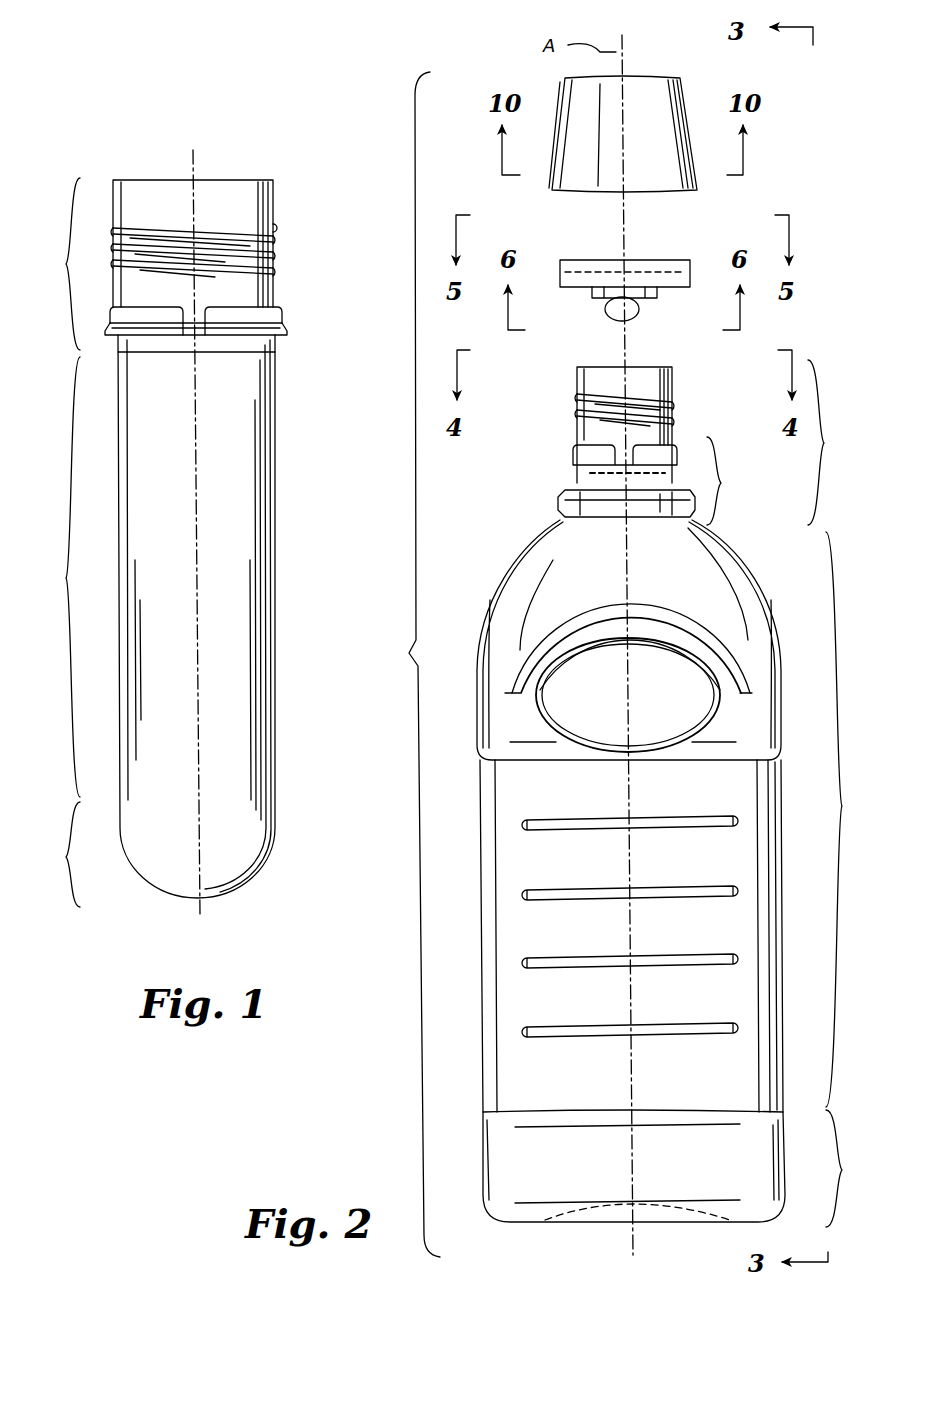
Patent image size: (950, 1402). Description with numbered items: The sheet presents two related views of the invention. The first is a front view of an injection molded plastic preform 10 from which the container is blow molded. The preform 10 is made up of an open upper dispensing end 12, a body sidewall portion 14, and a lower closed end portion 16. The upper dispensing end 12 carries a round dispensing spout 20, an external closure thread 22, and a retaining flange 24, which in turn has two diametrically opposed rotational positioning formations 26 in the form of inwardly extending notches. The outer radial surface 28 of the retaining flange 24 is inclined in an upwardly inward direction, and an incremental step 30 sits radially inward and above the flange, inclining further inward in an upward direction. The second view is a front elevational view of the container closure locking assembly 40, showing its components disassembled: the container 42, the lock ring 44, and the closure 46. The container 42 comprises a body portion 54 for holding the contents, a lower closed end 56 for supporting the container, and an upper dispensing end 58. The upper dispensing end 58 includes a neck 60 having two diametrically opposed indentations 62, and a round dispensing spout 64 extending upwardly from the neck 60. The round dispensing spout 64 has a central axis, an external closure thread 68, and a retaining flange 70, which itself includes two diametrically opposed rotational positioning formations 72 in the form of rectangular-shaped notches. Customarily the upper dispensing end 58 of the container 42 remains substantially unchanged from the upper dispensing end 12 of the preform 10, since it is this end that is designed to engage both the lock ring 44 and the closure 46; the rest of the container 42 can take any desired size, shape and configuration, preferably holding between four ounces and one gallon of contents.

In FIG. 1, the plastic preform 10 is at (251, 526).
In FIG. 1, the open upper dispensing end 12 is at (55, 264).
In FIG. 1, the body sidewall portion 14 is at (56, 577).
In FIG. 1, the lower closed end portion 16 is at (56, 854).
In FIG. 1, the round dispensing spout 20 is at (288, 178).
In FIG. 1, the external closure thread 22 is at (284, 238).
In FIG. 1, the retaining flange 24 is at (168, 340).
In FIG. 1, the rotational positioning formations 26 is at (210, 338).
In FIG. 1, the outer radial surface 28 is at (293, 328).
In FIG. 1, the incremental step 30 is at (286, 310).
In FIG. 2, the container closure locking assembly 40 is at (625, 655).
In FIG. 2, the container 42 is at (654, 793).
In FIG. 2, the lock ring 44 is at (673, 252).
In FIG. 2, the closure 46 is at (713, 82).
In FIG. 2, the body portion 54 is at (674, 816).
In FIG. 2, the lower closed end 56 is at (677, 1168).
In FIG. 2, the upper dispensing end 58 is at (665, 452).
In FIG. 2, the neck 60 is at (611, 490).
In FIG. 2, the indentations 62 is at (560, 500).
In FIG. 2, the round dispensing spout 64 is at (680, 373).
In FIG. 2, the external closure thread 68 is at (680, 397).
In FIG. 2, the retaining flange 70 is at (573, 455).
In FIG. 2, the rotational positioning formations 72 is at (612, 462).